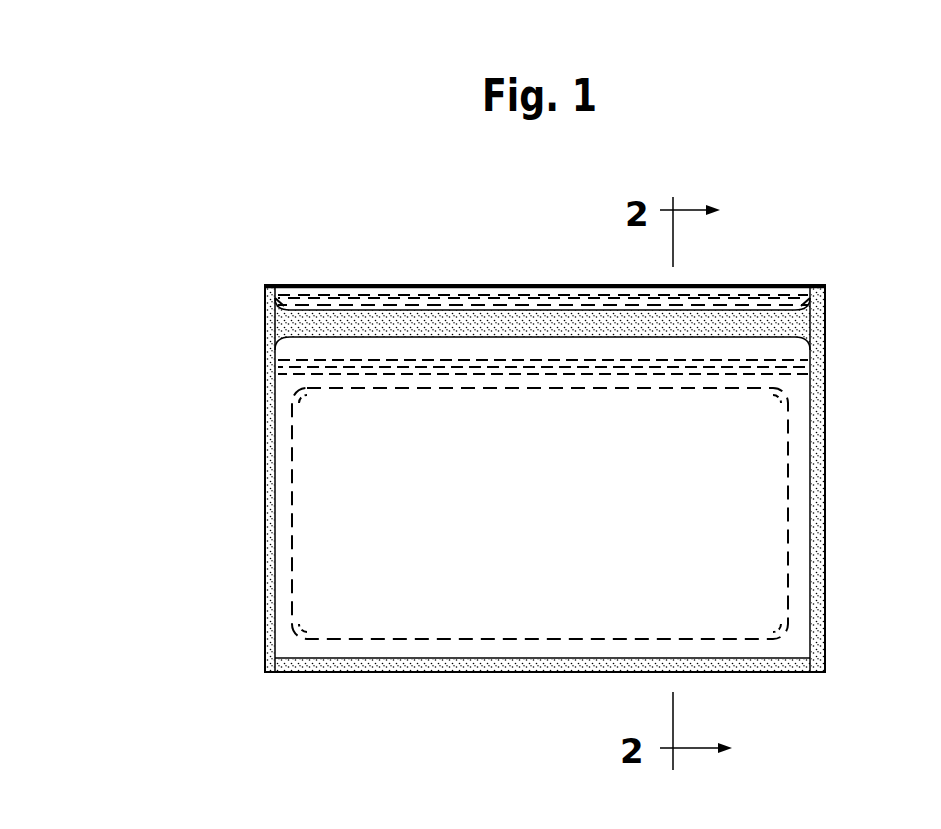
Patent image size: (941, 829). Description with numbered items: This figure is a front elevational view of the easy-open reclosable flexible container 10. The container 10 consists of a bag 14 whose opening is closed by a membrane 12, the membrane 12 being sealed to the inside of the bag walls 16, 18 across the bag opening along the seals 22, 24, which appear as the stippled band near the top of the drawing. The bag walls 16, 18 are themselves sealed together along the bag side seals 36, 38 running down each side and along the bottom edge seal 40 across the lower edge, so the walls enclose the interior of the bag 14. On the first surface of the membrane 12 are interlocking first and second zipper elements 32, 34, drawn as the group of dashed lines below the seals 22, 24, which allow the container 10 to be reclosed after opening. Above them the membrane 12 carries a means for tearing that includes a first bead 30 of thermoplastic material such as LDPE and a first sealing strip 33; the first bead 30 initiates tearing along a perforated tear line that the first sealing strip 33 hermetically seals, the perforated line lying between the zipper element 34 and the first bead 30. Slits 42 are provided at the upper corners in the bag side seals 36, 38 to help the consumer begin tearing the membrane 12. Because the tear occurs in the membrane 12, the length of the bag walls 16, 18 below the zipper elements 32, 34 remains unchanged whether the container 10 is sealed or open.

The reclosable flexible container 10 is at (405, 248).
The membrane 12 is at (286, 287).
The bag 14 is at (258, 457).
The bag wall 16 is at (332, 639).
The bag wall 18 is at (447, 620).
The seal 22 is at (573, 320).
The seal 24 is at (488, 322).
The first bead 30 is at (357, 295).
The first sealing strip 33 is at (412, 285).
The first zipper element 32 is at (276, 361).
The second zipper element 34 is at (276, 361).
The bag side seal 36 is at (273, 573).
The bag side seal 38 is at (822, 630).
The bottom edge seal 40 is at (565, 665).
The slit 42 is at (266, 304).